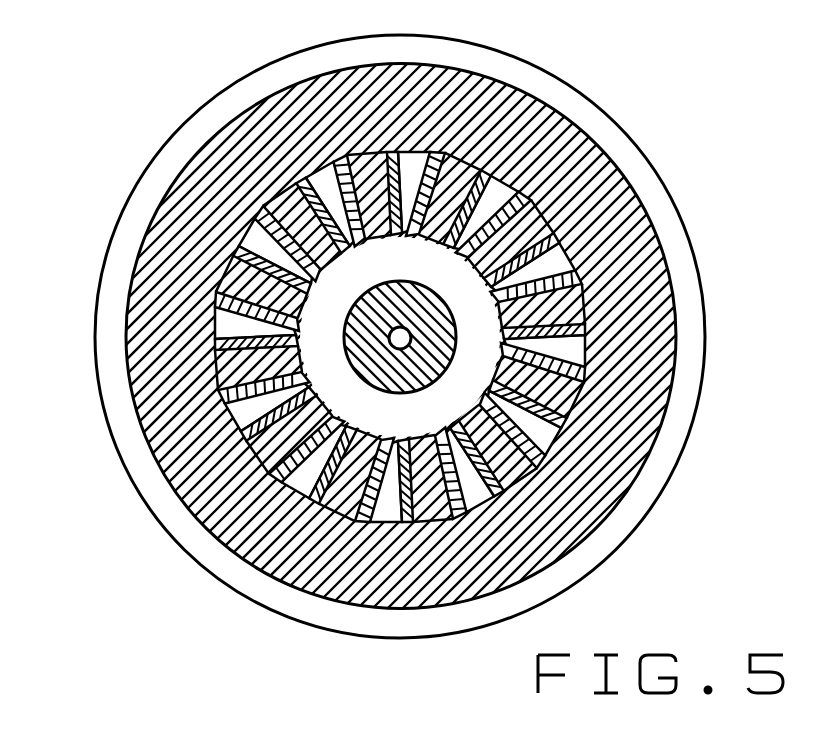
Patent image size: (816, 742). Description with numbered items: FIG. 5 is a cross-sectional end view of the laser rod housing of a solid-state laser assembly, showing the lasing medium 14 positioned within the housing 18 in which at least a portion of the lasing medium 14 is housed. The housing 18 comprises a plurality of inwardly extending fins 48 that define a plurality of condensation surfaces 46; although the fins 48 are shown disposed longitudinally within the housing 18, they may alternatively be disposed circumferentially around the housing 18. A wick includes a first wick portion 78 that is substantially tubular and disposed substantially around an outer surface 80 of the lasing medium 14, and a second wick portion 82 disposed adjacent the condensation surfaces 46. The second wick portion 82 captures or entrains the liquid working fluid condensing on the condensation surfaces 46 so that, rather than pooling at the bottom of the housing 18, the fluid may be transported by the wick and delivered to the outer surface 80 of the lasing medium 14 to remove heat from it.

The lasing medium 14 is at (411, 329).
The housing 18 is at (207, 103).
The condensation surfaces 46 is at (280, 252).
The fins 48 is at (213, 332).
The first wick portion 78 is at (393, 393).
The outer surface 80 is at (414, 345).
The second wick portion 82 is at (320, 478).